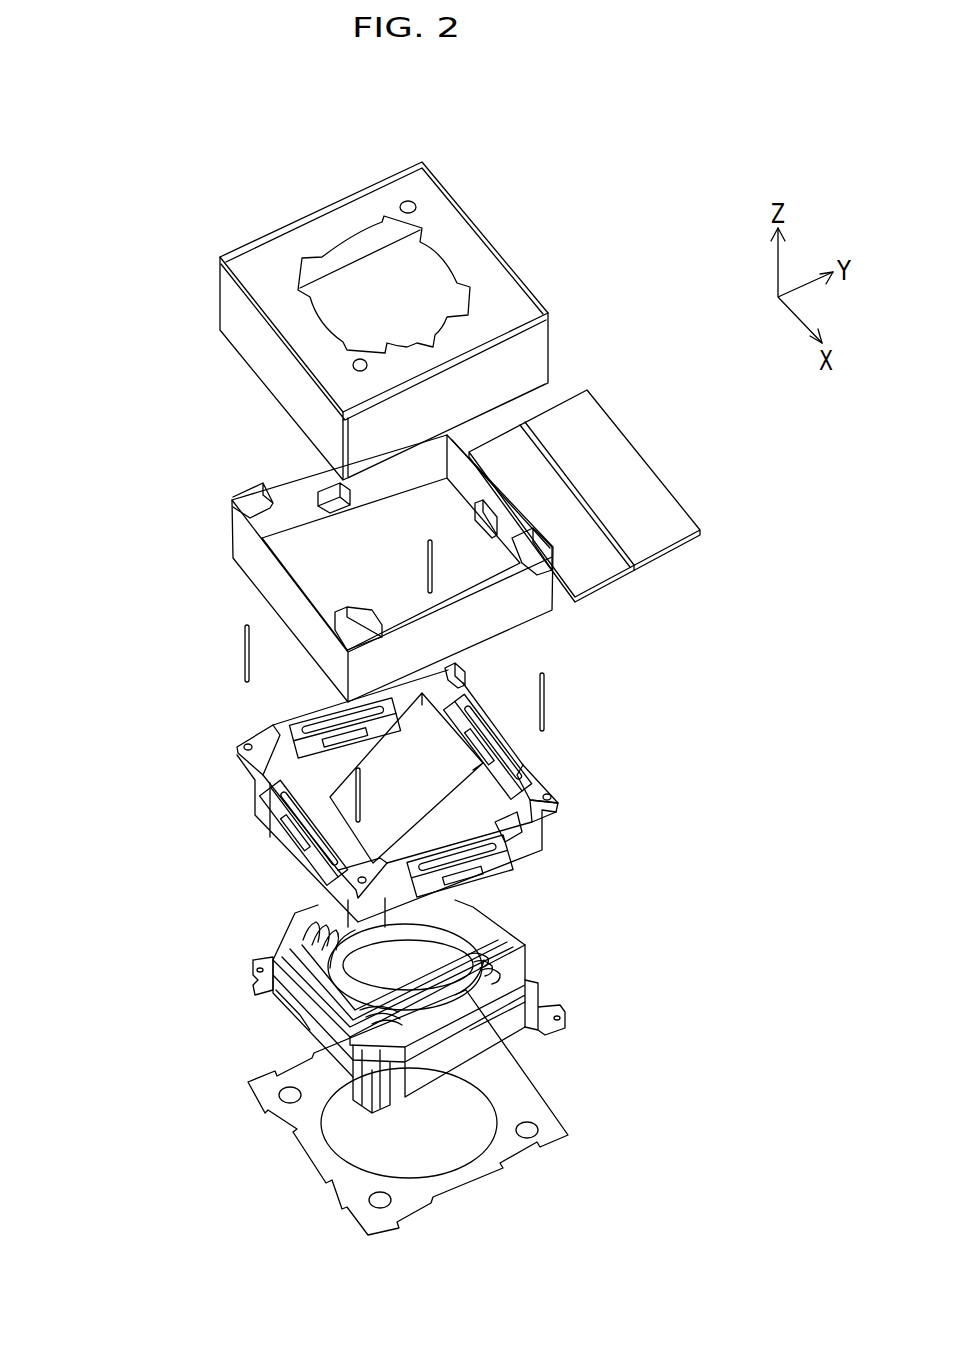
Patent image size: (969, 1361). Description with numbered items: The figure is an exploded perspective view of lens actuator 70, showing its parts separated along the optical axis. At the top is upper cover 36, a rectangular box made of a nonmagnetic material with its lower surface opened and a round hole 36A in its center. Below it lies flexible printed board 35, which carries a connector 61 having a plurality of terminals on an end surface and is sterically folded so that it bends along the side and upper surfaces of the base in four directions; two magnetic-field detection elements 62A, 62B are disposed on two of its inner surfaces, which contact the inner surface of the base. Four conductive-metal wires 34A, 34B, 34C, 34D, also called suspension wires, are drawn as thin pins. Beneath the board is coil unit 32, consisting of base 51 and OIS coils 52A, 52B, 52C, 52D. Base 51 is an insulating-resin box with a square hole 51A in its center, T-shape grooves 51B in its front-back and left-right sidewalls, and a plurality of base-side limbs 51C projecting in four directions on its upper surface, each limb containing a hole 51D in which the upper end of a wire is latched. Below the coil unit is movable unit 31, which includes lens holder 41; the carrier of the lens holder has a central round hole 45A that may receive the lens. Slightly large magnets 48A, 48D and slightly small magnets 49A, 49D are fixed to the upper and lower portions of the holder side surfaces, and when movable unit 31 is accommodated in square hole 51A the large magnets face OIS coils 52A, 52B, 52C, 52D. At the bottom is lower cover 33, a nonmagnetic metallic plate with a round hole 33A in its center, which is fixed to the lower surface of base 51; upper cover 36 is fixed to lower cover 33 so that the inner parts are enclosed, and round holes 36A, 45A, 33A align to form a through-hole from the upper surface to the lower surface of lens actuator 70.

The lens actuator 70 is at (613, 257).
The upper cover 36 is at (437, 207).
The round hole 36A is at (372, 268).
The flexible printed board 35 is at (585, 530).
The connector 61 is at (587, 445).
The magnetic-field detection element 62A is at (478, 523).
The magnetic-field detection element 62B is at (333, 497).
The wire 34A is at (328, 800).
The wire 34B is at (548, 702).
The wire 34C is at (432, 561).
The wire 34D is at (240, 642).
The base 51 is at (517, 865).
The square hole 51A is at (310, 806).
The T-shape groove 51B is at (473, 877).
The base-side limb 51C is at (538, 783).
The hole 51D is at (528, 826).
The OIS coil 52A is at (513, 838).
The OIS coil 52B is at (480, 703).
The OIS coil 52C is at (317, 712).
The OIS coil 52D is at (313, 827).
The coil unit 32 is at (510, 832).
The lens holder 41 is at (473, 937).
The round hole 45A is at (373, 965).
The movable unit 31 is at (513, 957).
The magnet 48A is at (495, 1018).
The magnet 48D is at (303, 988).
The magnet 49A is at (492, 1047).
The magnet 49D is at (307, 1023).
The lower cover 33 is at (513, 1148).
The round hole 33A is at (427, 1140).